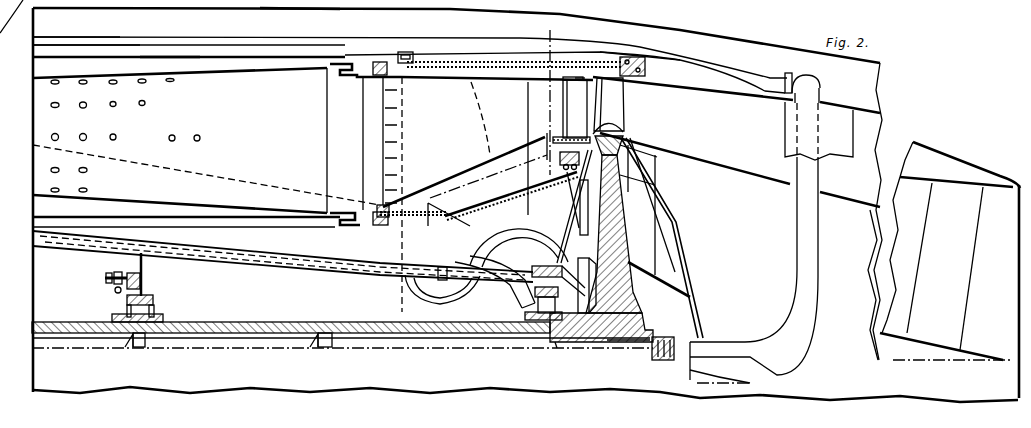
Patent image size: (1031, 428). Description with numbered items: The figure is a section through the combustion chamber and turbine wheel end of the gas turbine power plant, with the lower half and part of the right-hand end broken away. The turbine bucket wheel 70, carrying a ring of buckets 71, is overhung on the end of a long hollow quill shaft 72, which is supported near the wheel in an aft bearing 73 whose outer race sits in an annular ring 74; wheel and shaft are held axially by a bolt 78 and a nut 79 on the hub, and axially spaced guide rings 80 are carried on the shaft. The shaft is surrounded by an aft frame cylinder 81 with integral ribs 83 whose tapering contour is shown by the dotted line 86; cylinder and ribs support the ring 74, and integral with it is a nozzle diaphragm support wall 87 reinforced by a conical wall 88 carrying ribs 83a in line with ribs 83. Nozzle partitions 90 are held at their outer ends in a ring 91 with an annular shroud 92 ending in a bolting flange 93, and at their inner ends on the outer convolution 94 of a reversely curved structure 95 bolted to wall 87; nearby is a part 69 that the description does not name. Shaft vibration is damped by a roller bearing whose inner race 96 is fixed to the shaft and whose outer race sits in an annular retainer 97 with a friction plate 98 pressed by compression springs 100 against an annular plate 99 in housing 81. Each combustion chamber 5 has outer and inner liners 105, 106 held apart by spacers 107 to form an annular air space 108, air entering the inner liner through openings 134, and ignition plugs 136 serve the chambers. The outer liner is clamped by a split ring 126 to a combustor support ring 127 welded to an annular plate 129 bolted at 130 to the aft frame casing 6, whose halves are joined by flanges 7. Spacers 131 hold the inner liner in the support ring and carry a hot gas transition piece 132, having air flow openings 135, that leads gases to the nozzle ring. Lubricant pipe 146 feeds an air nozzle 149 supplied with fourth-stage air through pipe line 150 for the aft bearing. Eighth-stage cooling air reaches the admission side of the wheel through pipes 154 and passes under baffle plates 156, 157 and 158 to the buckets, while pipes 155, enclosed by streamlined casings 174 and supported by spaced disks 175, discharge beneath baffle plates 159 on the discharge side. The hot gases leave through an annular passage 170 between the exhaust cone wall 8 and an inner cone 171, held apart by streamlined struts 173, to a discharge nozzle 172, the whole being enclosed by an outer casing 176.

The combustion chambers 5 is at (182, 88).
The aft frame casing 6 is at (468, 80).
The bolted together flanges 7 is at (550, 28).
The outer wall of exhaust cone 8 is at (866, 104).
The dome member 69 is at (620, 130).
The turbine bucket wheel 70 is at (612, 230).
The buckets 71 is at (620, 105).
The hollow quill shaft 72 is at (297, 322).
The aft bearing 73 is at (557, 343).
The annular ring 74 is at (542, 265).
The bolt 78 is at (606, 342).
The nut 79 is at (661, 337).
The guide rings 80 is at (140, 348).
The aft frame cylinder 81 is at (340, 255).
The ribs 83 is at (474, 235).
The ribs 83a is at (478, 62).
The dotted line 86 is at (258, 187).
The turbine nozzle diaphragm support wall 87 is at (575, 200).
The conical wall 88 is at (511, 219).
The nozzle partitions 90 is at (565, 104).
The ring 91 is at (577, 78).
The annular shroud 92 is at (615, 66).
The rear aft frame bolting flange 93 is at (645, 70).
The outer convolution 94 is at (573, 137).
The reversely curved structure 95 is at (563, 165).
The inner race 96 is at (135, 323).
The annular retainer 97 is at (155, 300).
The friction plate 98 is at (145, 280).
The annular plate 99 is at (137, 259).
The compression springs 100 is at (122, 290).
The outer wall or liner 105 is at (122, 57).
The inner liner 106 is at (148, 73).
The spacers 107 is at (348, 78).
The annular air space 108 is at (46, 68).
The split ring 126 is at (374, 231).
The combustor support ring 127 is at (382, 62).
The annular plate 129 is at (400, 308).
The bolted connection 130 is at (408, 52).
The spacers 131 is at (390, 210).
The hot gas transition piece 132 is at (465, 178).
The openings 134 is at (85, 168).
The air flow openings 135 is at (515, 80).
The ignition plugs 136 is at (540, 140).
The pipe 146 is at (495, 285).
The air nozzle 149 is at (522, 306).
The pipe line 150 is at (245, 260).
The pipes 154 is at (449, 305).
The pipes 155 is at (300, 40).
The baffle plate 156 is at (580, 258).
The baffle plate 157 is at (585, 203).
The baffle plate 158 is at (664, 165).
The baffle plates 159 is at (635, 188).
The annular passage 170 is at (736, 100).
The inner cone 171 is at (745, 172).
The discharge nozzle 172 is at (1000, 328).
The streamlined struts 173 is at (967, 256).
The streamlined casings 174 is at (785, 122).
The spaced disks 175 is at (672, 223).
The outer casing 176 is at (696, 29).